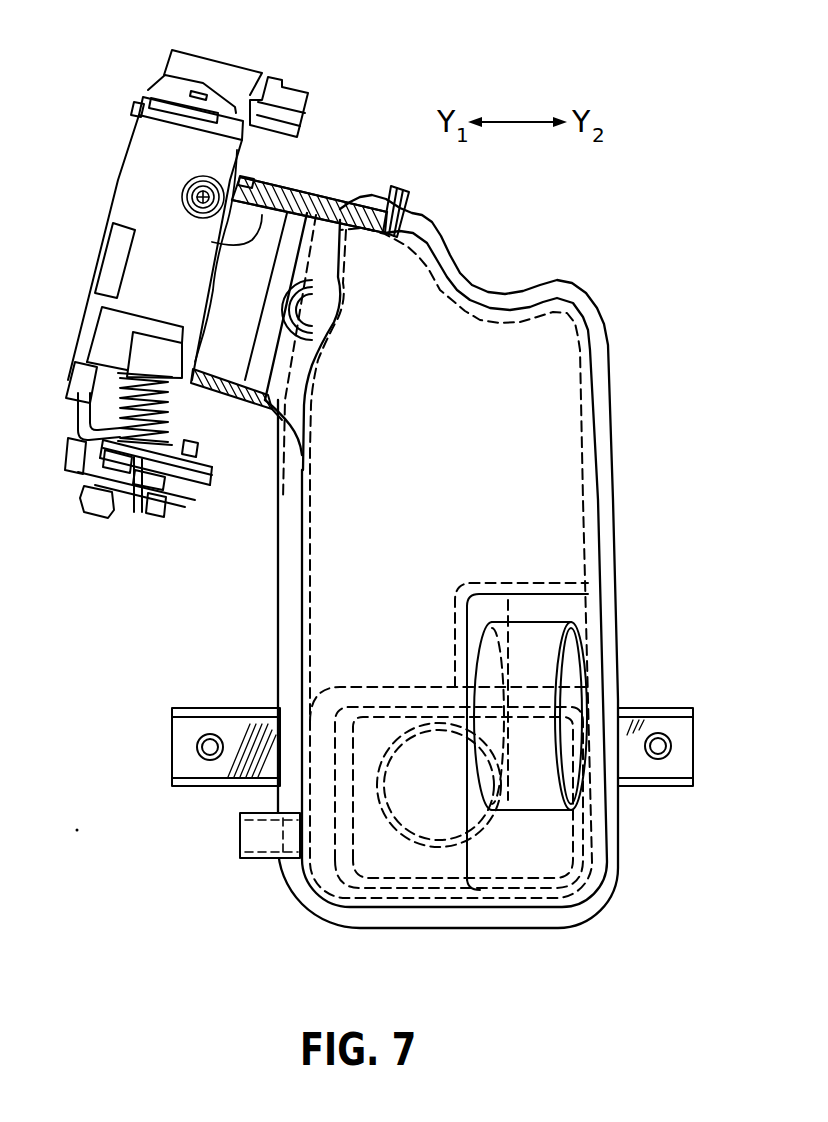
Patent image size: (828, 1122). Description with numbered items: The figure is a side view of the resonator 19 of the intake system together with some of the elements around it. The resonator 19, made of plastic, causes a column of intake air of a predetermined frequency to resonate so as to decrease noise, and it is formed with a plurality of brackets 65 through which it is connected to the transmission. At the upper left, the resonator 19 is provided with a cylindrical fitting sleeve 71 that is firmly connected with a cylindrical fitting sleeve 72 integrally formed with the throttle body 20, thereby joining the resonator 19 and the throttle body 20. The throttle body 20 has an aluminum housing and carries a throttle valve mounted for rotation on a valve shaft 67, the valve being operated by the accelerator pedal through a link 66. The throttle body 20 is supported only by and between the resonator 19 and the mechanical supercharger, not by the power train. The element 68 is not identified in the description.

The resonator 19 is at (565, 271).
The throttle body 20 is at (258, 72).
The brackets 65 is at (183, 788).
The link 66 is at (180, 473).
The valve shaft 67 is at (118, 428).
The mounting flange 68 is at (305, 173).
The cylindrical fitting sleeve 71 is at (234, 402).
The cylindrical fitting sleeve 72 is at (212, 242).